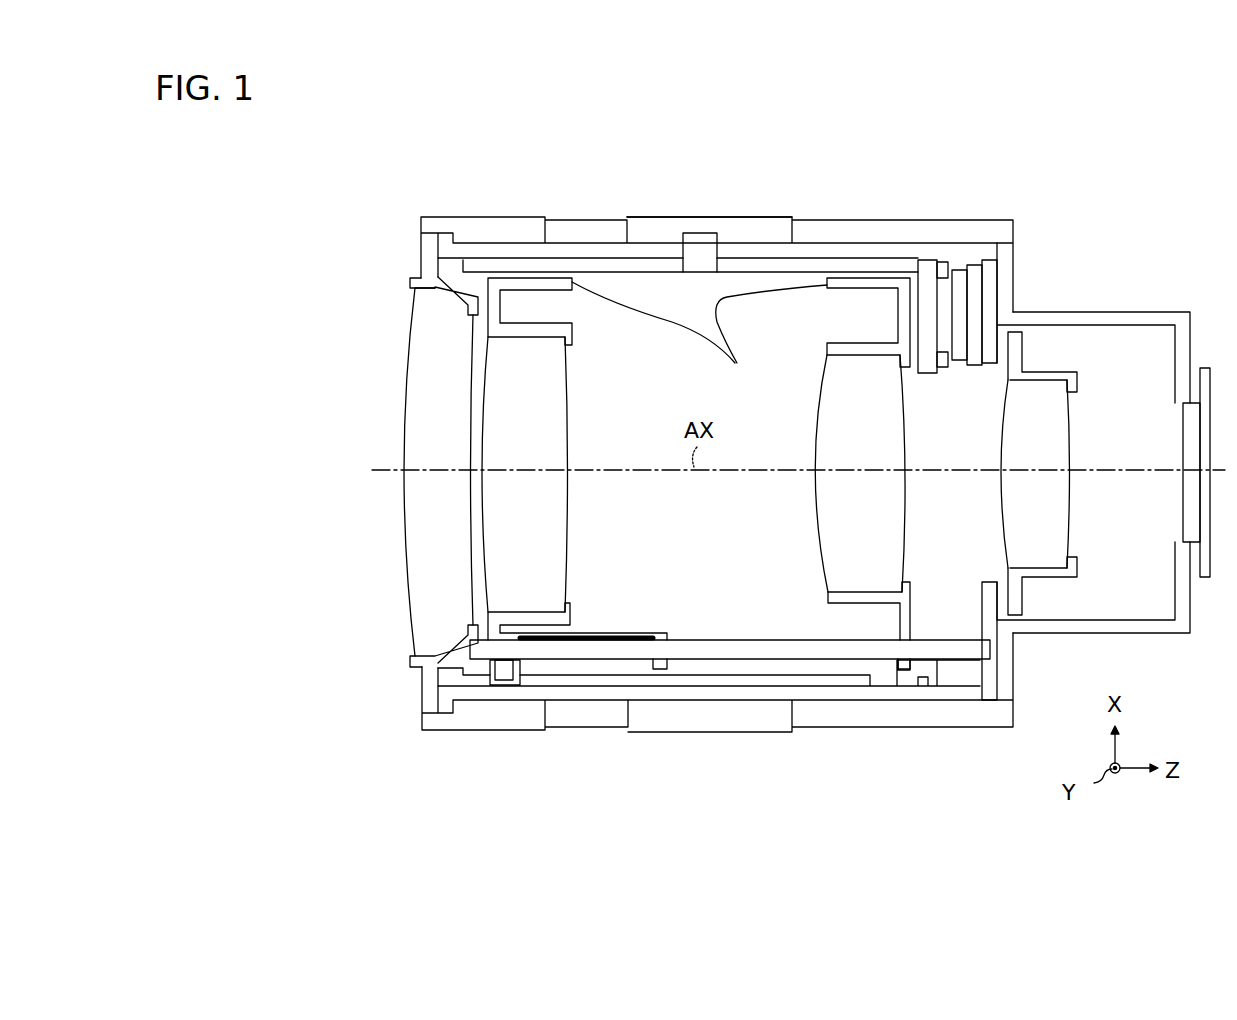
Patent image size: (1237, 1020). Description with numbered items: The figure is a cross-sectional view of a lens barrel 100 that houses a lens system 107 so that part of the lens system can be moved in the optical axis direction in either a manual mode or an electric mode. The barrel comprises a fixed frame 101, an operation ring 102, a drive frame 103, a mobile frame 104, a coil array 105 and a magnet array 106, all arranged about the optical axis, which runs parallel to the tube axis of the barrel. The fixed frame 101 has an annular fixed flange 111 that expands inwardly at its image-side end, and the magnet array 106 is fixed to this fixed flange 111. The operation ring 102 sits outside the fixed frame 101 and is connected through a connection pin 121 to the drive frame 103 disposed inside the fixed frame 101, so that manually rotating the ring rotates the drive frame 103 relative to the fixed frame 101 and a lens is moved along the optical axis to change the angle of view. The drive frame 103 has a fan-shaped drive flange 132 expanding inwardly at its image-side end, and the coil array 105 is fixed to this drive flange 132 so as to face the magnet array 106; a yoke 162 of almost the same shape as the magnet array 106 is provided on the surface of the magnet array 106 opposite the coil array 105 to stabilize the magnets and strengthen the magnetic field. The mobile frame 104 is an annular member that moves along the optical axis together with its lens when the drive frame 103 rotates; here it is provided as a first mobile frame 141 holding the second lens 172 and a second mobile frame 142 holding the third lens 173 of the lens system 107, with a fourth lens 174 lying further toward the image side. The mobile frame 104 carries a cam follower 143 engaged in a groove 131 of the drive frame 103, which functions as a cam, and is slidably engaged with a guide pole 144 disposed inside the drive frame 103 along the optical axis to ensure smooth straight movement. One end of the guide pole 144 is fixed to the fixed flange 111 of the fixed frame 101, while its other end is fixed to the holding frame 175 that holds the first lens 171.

The lens barrel 100 is at (1117, 146).
The fixed frame 101 is at (818, 250).
The operation ring 102 is at (742, 217).
The drive frame 103 is at (658, 242).
The mobile frame 104 is at (754, 394).
The coil array 105 is at (943, 263).
The magnet array 106 is at (963, 274).
The lens system 107 is at (413, 303).
The fixed flange 111 is at (990, 263).
The connection pin 121 is at (703, 250).
The groove 131 is at (508, 685).
The drive flange 132 is at (927, 307).
The first mobile frame 141 is at (572, 328).
The second mobile frame 142 is at (827, 343).
The cam follower 143 is at (508, 660).
The guide pole 144 is at (707, 640).
The yoke 162 is at (975, 302).
The first lens 171 is at (458, 550).
The second lens 172 is at (544, 550).
The third lens 173 is at (883, 550).
The fourth lens 174 is at (1058, 550).
The holding frame 175 is at (430, 688).